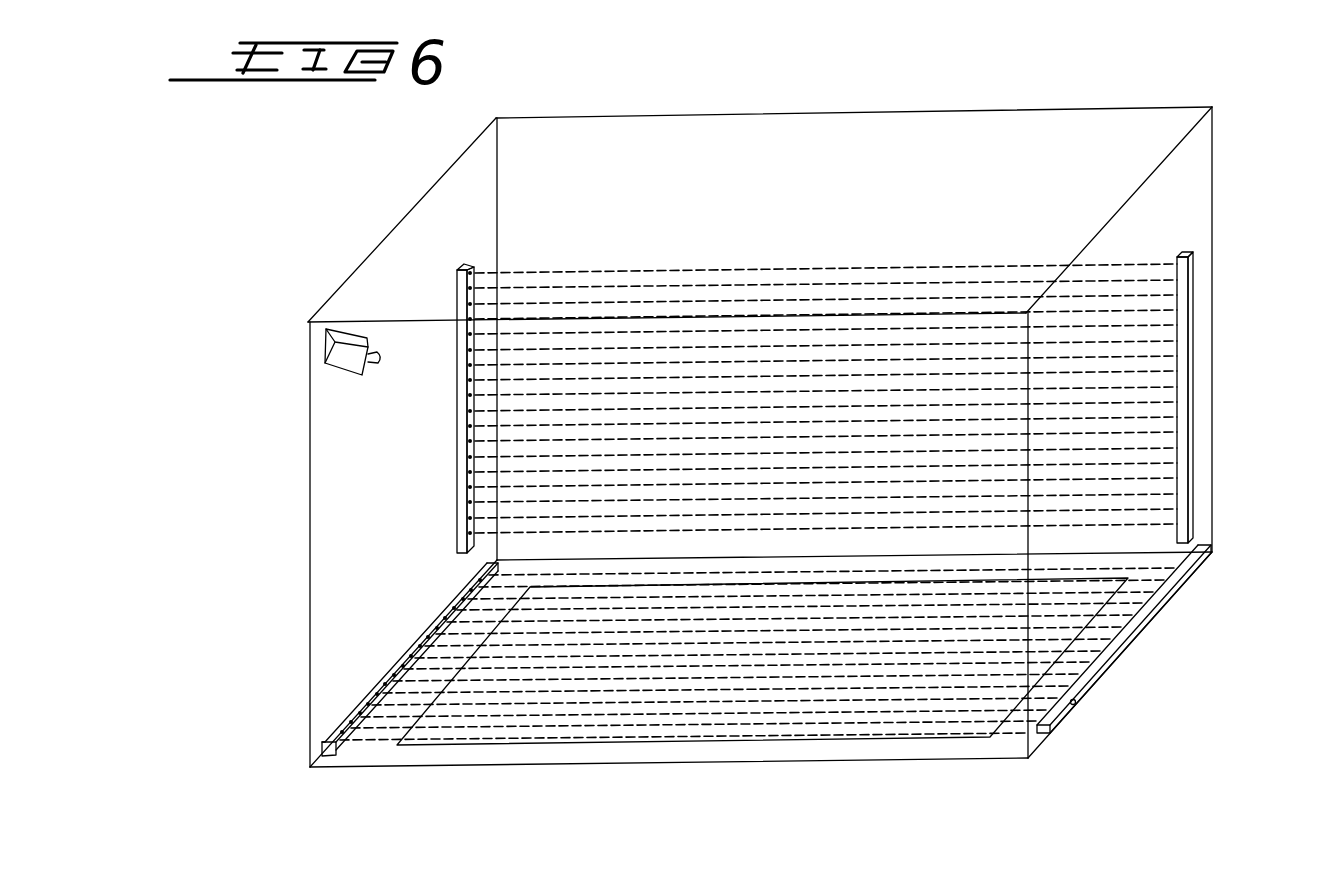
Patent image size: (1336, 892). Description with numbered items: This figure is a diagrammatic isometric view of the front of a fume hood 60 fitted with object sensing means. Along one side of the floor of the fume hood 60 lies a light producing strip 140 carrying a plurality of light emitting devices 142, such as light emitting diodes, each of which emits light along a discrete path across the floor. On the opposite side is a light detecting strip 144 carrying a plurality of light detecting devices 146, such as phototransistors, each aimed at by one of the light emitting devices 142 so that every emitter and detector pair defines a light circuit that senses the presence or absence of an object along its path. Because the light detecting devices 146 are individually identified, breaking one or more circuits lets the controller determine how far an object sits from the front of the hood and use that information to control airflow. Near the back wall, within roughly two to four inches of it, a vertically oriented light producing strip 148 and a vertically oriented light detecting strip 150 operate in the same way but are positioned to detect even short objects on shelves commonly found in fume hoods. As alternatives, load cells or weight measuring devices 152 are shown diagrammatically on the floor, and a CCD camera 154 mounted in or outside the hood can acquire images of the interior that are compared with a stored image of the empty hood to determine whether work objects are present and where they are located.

The fume hood 60 is at (795, 111).
The light producing strip 140 is at (1140, 630).
The light emitting devices 142 is at (1076, 704).
The light detecting strip 144 is at (376, 690).
The light detecting devices 146 is at (333, 739).
The vertically oriented light producing strip 148 is at (1189, 308).
The vertically oriented light detecting strip 150 is at (459, 441).
The load cells or weight measuring devices 152 is at (636, 743).
The CCD camera 154 is at (323, 353).